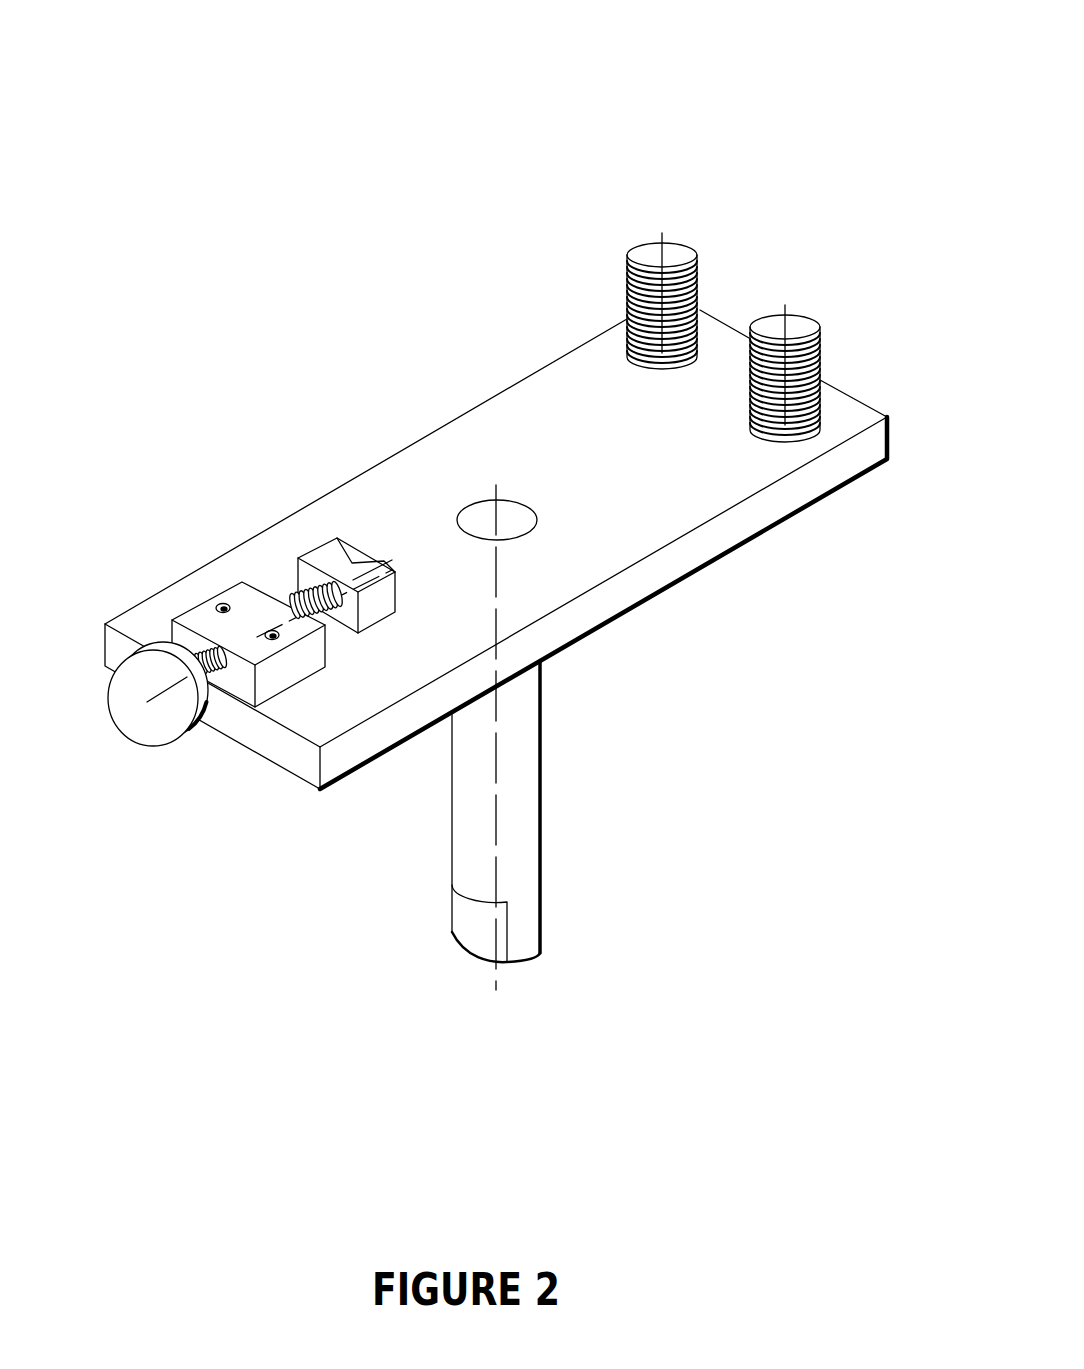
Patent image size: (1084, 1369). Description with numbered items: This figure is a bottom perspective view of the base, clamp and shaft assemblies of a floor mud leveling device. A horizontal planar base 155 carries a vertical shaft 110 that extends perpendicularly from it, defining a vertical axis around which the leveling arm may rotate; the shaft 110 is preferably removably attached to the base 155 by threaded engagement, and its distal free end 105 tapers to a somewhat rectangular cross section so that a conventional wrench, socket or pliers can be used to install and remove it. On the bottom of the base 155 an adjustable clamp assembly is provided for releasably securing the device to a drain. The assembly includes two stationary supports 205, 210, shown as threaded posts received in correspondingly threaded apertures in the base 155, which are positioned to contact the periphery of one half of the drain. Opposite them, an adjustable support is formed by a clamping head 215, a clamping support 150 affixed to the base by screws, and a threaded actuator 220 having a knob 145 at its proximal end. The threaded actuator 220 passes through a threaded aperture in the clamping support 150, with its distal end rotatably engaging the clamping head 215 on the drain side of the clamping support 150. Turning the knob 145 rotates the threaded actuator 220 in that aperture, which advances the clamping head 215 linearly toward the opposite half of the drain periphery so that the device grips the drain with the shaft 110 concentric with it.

The distal free end 105 is at (517, 924).
The vertical shaft 110 is at (532, 773).
The knob 145 is at (153, 720).
The clamping support 150 is at (250, 600).
The base 155 is at (476, 443).
The stationary support 205 is at (663, 253).
The stationary support 210 is at (803, 327).
The clamping head 215 is at (328, 552).
The threaded actuator 220 is at (203, 650).